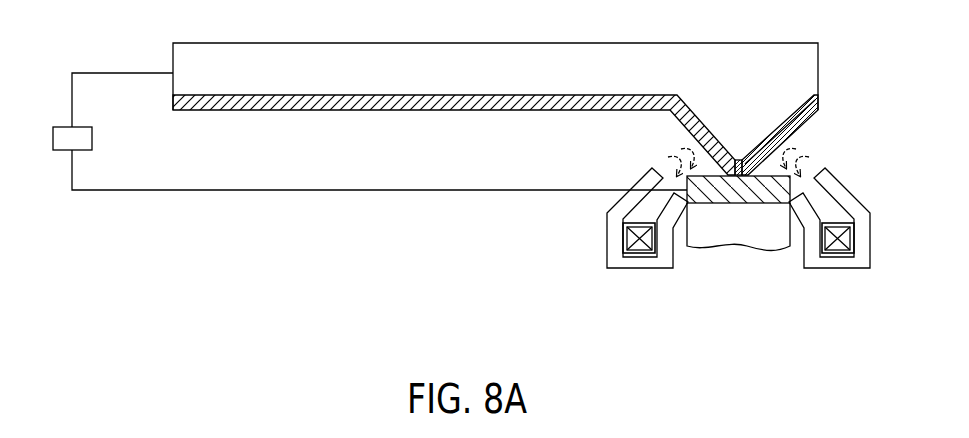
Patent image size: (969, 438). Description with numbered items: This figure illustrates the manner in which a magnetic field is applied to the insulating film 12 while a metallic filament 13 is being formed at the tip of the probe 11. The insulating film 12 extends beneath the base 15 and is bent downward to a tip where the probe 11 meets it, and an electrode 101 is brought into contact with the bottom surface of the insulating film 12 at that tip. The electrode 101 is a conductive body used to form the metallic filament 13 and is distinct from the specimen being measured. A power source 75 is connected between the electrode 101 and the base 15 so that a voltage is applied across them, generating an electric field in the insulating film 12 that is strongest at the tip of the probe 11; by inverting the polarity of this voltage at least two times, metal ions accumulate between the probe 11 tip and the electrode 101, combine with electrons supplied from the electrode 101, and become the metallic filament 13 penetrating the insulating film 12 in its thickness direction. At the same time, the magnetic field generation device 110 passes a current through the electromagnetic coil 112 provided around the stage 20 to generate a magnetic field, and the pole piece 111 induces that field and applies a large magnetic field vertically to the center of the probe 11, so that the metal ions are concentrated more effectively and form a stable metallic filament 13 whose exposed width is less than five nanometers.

The base 15 is at (173, 54).
The insulating film 12 is at (173, 103).
The probe 11 is at (732, 134).
The metallic filament 13 is at (774, 168).
The power source 75 is at (92, 139).
The magnetic field generation device 110 is at (671, 222).
The pole piece 111 is at (607, 223).
The electromagnetic coil 112 is at (625, 235).
The electrode 101 is at (767, 193).
The stage 20 is at (715, 230).